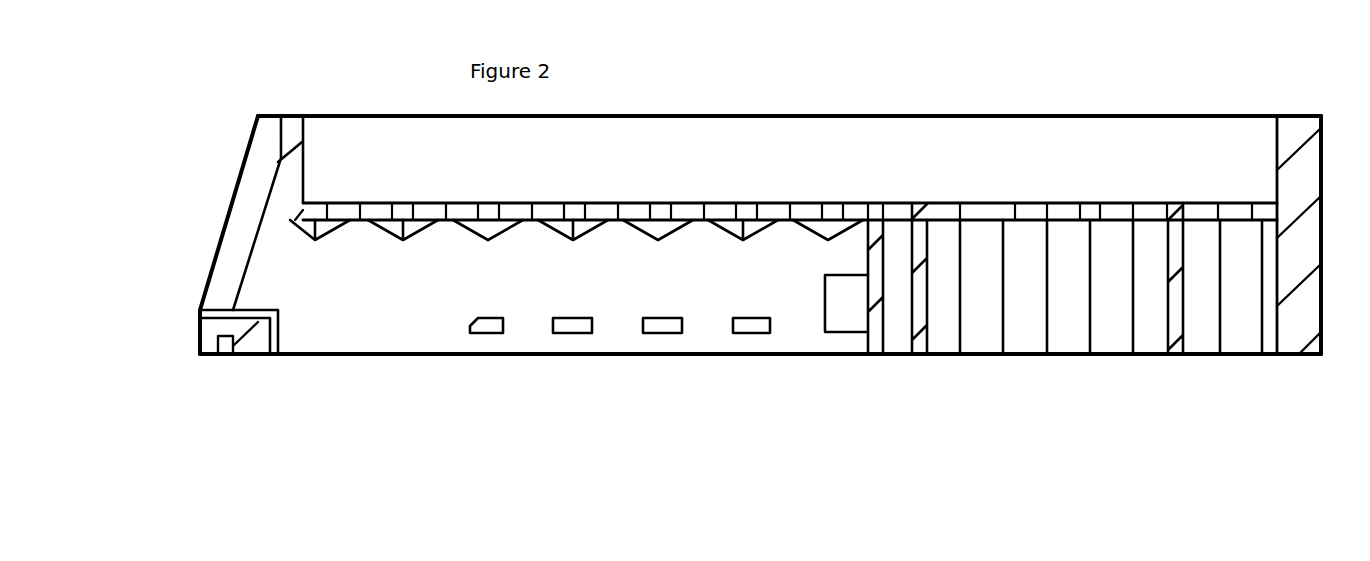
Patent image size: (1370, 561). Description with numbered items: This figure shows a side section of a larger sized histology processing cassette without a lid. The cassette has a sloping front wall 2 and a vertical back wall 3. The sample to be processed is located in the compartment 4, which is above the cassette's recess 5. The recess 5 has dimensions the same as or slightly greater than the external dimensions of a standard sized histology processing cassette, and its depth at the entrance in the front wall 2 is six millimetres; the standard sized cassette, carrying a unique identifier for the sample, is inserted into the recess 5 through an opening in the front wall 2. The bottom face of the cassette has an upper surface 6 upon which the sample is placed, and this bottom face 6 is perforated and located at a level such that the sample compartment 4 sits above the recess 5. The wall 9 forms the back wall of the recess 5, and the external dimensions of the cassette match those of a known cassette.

The sloping front wall 2 is at (245, 158).
The vertical back wall 3 is at (1322, 155).
The compartment 4 is at (996, 158).
The recess 5 is at (408, 308).
The upper surface 6 is at (930, 220).
The wall 9 is at (876, 343).